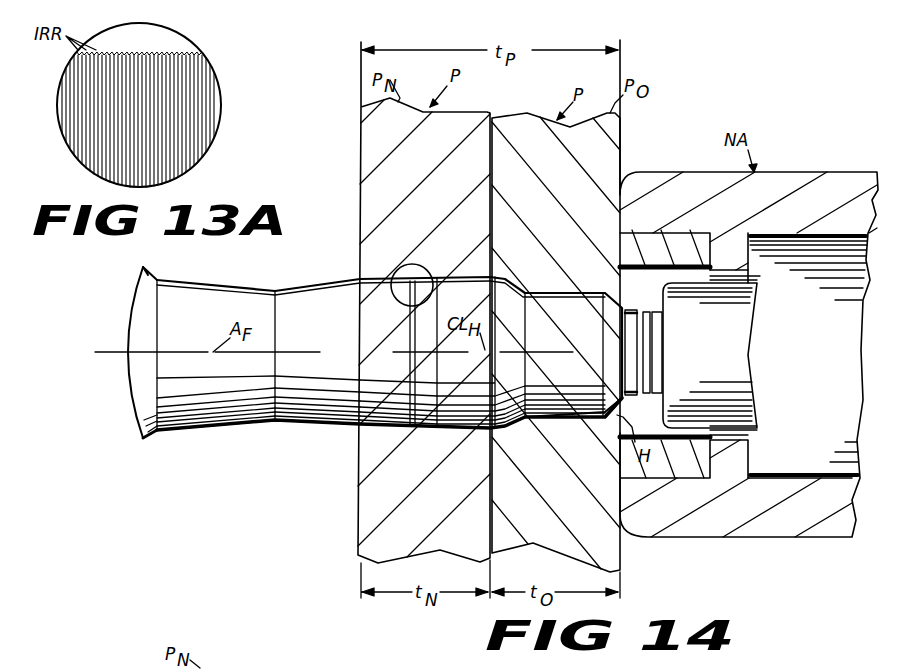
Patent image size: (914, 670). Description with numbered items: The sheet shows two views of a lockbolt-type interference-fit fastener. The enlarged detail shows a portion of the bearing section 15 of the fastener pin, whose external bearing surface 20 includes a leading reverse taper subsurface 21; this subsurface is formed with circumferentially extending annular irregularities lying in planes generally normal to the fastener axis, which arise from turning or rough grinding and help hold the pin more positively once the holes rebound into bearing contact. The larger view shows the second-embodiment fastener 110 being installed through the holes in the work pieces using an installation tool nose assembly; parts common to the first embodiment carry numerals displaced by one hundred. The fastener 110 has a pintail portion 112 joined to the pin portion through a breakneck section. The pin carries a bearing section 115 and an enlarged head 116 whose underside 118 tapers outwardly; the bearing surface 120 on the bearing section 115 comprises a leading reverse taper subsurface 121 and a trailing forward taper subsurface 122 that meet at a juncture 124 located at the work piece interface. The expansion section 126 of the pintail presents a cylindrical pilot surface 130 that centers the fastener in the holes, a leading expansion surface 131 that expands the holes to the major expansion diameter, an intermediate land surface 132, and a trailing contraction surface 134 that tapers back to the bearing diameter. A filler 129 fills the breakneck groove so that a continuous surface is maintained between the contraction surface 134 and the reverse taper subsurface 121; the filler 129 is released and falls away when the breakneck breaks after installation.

In FIG. 13A, the bearing section 15 is at (206, 141).
In FIG. 14, the bearing section 15 is at (430, 272).
In FIG. 13A, the external bearing surface 20 is at (180, 49).
In FIG. 13A, the leading reverse taper subsurface 21 is at (195, 95).
In FIG. 14, the fastener 110 is at (376, 359).
In FIG. 14, the pintail portion 112 is at (625, 302).
In FIG. 14, the bearing section 115 is at (232, 426).
In FIG. 14, the enlarged head 116 is at (132, 363).
In FIG. 14, the underside of head 118 is at (152, 273).
In FIG. 14, the bearing surface 120 is at (343, 428).
In FIG. 14, the leading reverse taper subsurface 121 is at (345, 282).
In FIG. 14, the trailing forward taper subsurface 122 is at (180, 428).
In FIG. 14, the juncture 124 is at (277, 290).
In FIG. 14, the expansion section 126 is at (552, 287).
In FIG. 14, the filler 129 is at (410, 328).
In FIG. 14, the pilot surface 130 is at (555, 408).
In FIG. 14, the leading expansion surface 131 is at (510, 437).
In FIG. 14, the intermediate land surface 132 is at (458, 438).
In FIG. 14, the trailing contraction surface 134 is at (420, 437).